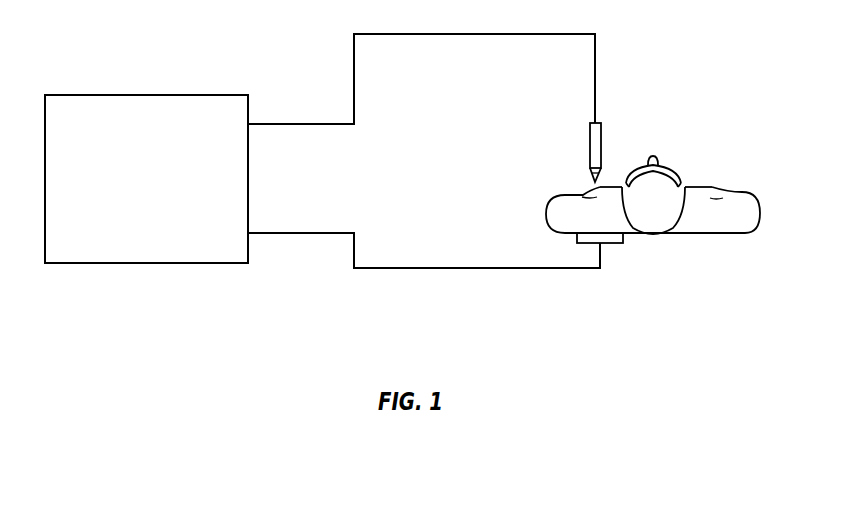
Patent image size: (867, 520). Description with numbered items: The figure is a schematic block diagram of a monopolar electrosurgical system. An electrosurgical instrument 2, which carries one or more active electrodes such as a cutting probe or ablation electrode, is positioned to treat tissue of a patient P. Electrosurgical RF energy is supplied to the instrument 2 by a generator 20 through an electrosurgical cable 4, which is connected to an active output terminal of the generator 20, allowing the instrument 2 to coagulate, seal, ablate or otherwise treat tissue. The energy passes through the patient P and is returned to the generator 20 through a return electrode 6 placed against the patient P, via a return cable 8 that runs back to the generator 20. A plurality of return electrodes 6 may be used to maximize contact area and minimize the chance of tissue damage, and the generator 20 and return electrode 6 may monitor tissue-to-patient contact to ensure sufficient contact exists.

The generator 20 is at (137, 94).
The electrosurgical cable 4 is at (477, 33).
The electrosurgical instrument 2 is at (590, 152).
The patient P is at (725, 184).
The return electrode 6 is at (612, 244).
The return cable 8 is at (490, 269).